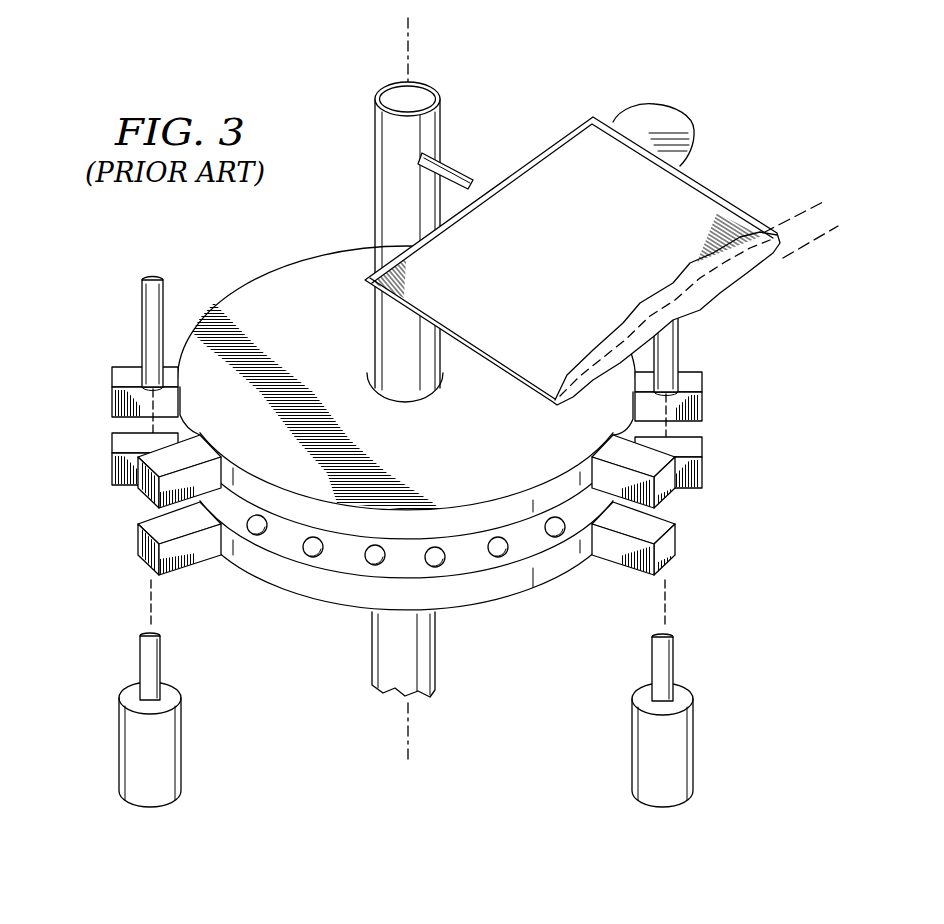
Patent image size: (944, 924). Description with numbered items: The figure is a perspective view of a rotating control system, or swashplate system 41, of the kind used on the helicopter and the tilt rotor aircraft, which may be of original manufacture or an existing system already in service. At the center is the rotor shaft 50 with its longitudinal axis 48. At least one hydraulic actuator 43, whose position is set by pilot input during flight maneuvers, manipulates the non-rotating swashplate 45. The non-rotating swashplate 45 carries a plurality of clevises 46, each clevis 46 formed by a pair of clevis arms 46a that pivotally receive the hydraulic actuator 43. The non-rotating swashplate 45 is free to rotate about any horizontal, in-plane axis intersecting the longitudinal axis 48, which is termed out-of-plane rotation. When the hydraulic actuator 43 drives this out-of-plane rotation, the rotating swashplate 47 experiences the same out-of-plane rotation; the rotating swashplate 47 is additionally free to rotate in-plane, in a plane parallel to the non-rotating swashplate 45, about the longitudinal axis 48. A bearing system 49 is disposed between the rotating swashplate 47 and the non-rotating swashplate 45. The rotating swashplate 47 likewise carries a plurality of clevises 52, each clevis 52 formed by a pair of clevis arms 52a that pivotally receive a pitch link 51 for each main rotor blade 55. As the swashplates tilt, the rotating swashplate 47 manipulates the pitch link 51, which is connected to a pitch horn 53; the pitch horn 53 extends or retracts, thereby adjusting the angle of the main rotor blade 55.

The swashplate system 41 is at (511, 80).
The hydraulic actuator 43 is at (126, 758).
The non-rotating swashplate 45 is at (272, 583).
The clevis 46 is at (114, 511).
The clevis arms 46a is at (114, 477).
The rotating swashplate 47 is at (264, 284).
The longitudinal axis 48 is at (406, 34).
The bearing system 49 is at (500, 560).
The rotor shaft 50 is at (385, 145).
The pitch link 51 is at (149, 318).
The clevis 52 is at (99, 425).
The clevis arms 52a is at (112, 395).
The pitch horn 53 is at (663, 108).
The main rotor blade 55 is at (521, 160).